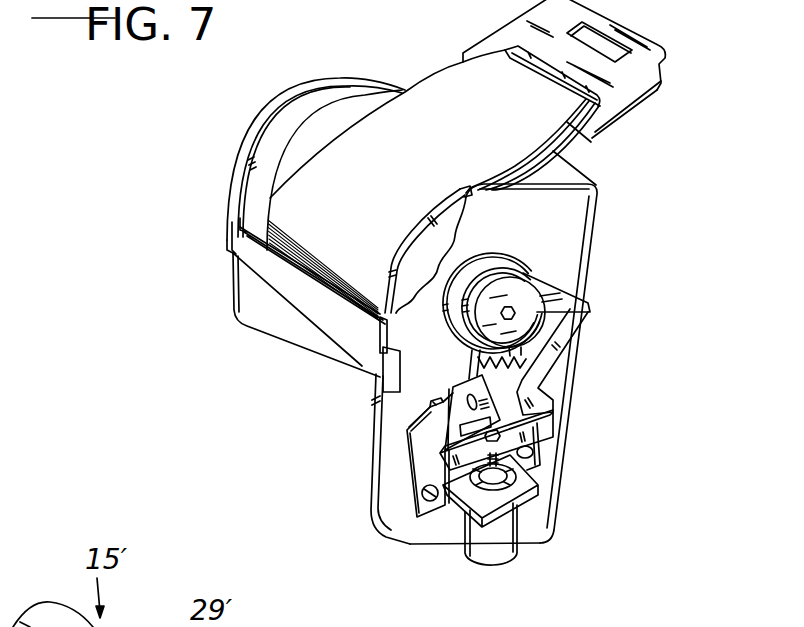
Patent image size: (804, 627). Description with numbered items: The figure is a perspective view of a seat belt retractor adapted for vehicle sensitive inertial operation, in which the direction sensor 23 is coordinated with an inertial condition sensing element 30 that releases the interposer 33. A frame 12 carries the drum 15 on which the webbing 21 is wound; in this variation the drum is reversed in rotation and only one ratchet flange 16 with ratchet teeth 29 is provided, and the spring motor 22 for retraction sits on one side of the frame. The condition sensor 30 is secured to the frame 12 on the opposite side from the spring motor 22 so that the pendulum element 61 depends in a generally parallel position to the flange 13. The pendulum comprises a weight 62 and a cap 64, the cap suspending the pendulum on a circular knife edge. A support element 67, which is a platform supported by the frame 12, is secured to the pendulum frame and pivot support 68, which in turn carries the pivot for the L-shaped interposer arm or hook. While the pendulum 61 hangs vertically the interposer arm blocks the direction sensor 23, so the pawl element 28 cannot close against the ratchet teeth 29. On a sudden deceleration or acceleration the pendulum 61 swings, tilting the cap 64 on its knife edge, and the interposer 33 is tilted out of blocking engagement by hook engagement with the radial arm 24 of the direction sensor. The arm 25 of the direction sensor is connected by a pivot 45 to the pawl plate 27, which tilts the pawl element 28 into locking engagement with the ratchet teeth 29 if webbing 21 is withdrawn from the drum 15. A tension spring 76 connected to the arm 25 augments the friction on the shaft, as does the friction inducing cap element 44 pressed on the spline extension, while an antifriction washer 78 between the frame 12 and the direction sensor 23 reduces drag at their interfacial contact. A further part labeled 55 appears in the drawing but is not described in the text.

The frame 12 is at (588, 228).
The flange 13 is at (388, 485).
The drum 15 is at (260, 181).
The ratchet flange 16 is at (424, 254).
The webbing 21 is at (443, 80).
The spring motor 22 is at (273, 112).
The direction sensor 23 is at (571, 279).
The radial arm 24 is at (589, 296).
The arm 25 is at (478, 356).
The pawl plate 27 is at (463, 390).
The pawl element 28 is at (445, 442).
The ratchet teeth 29 is at (447, 205).
The condition sensing element 30 is at (587, 420).
The interposer 33 is at (560, 352).
The friction inducing cap element 44 is at (518, 294).
The pivot 45 is at (440, 410).
The cover plate 55 is at (632, 100).
The pendulum element 61 is at (527, 550).
The weight 62 is at (487, 547).
The cap 64 is at (510, 472).
The support element 67 is at (465, 494).
The pendulum frame and pivot support 68 is at (390, 490).
The tension spring 76 is at (510, 362).
The antifriction washer 78 is at (472, 266).